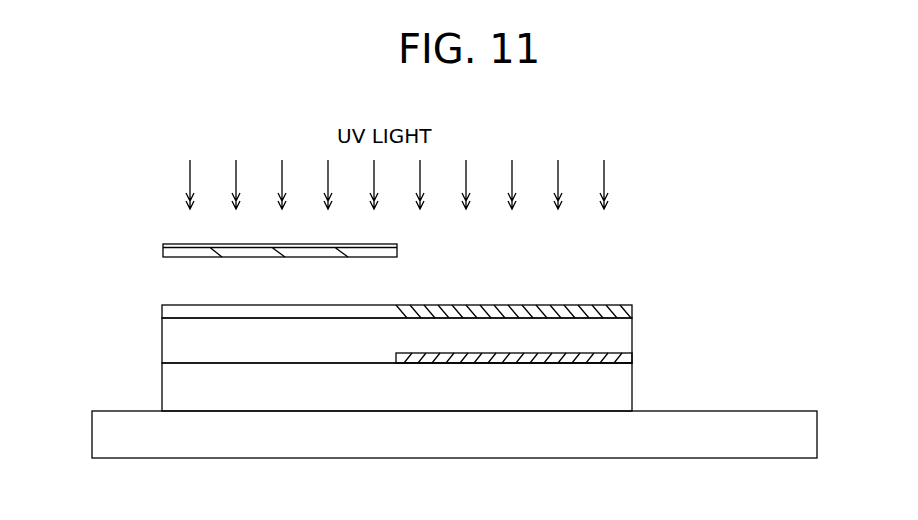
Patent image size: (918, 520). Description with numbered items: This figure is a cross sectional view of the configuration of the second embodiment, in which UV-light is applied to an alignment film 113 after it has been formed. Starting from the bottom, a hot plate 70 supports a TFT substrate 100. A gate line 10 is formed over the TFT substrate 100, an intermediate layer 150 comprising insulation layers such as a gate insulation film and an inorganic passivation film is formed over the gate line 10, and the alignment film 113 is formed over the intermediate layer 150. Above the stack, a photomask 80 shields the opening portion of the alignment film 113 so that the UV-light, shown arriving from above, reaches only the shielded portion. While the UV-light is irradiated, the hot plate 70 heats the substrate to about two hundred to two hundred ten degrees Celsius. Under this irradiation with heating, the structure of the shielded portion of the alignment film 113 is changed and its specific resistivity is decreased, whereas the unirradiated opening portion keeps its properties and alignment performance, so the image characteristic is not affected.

The photomask 80 is at (178, 251).
The alignment film 113 is at (178, 312).
The intermediate layer 150 is at (618, 333).
The gate line 10 is at (618, 358).
The TFT substrate 100 is at (618, 390).
The hot plate 70 is at (798, 433).